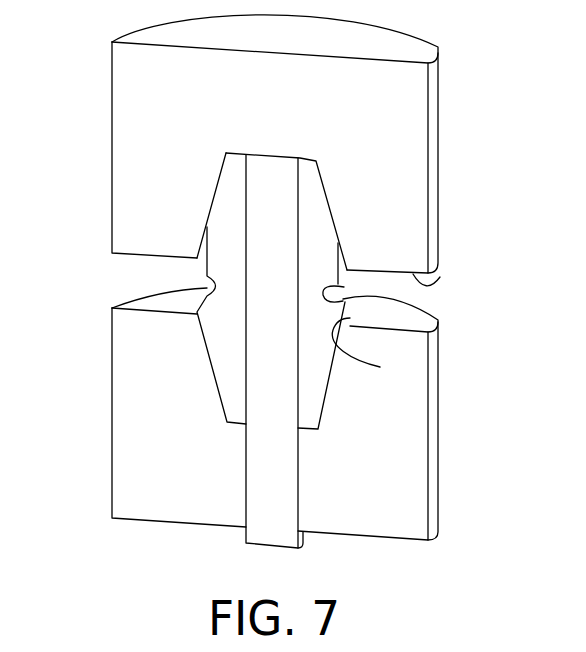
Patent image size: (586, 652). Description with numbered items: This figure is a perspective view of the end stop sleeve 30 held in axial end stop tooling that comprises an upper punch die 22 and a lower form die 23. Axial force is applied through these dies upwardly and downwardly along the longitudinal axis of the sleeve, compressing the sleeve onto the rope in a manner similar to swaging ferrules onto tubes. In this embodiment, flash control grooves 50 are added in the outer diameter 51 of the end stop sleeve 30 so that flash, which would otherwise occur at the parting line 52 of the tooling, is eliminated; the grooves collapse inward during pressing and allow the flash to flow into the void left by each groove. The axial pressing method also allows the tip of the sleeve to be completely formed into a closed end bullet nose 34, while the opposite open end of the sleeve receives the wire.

The upper punch die 22 is at (130, 157).
The lower form die 23 is at (130, 395).
The end stop sleeve 30 is at (327, 195).
The closed end bullet nose 34 is at (303, 156).
The flash control grooves 50 is at (345, 288).
The outer diameter 51 is at (380, 367).
The parting line 52 is at (440, 277).